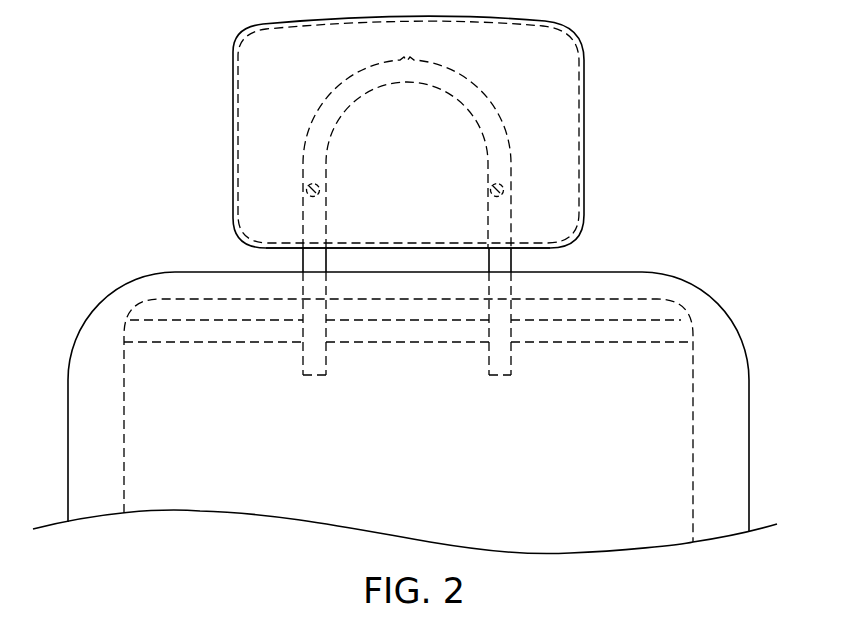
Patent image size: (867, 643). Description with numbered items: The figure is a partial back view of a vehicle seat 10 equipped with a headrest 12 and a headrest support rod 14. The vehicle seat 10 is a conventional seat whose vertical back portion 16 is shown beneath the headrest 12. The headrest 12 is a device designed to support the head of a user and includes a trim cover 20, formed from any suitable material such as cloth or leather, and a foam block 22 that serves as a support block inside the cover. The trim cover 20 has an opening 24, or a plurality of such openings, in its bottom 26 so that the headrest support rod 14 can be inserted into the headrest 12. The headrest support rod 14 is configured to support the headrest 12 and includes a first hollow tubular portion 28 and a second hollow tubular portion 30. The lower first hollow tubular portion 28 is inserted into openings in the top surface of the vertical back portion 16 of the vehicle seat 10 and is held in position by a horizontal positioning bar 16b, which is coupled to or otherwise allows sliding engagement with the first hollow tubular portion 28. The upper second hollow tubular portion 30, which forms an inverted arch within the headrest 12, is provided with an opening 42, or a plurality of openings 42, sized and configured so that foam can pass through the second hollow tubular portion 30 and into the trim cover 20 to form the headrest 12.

The vehicle seat 10 is at (412, 396).
The headrest 12 is at (583, 37).
The headrest support rod 14 is at (512, 165).
The vertical back portion 16 is at (732, 320).
The horizontal positioning bar 16b is at (603, 343).
The trim cover 20 is at (584, 72).
The foam block 22 is at (543, 121).
The opening 24 is at (328, 242).
The bottom 26 is at (538, 249).
The first hollow tubular portion 28 is at (303, 368).
The second hollow tubular portion 30 is at (469, 78).
The opening 42 is at (306, 186).